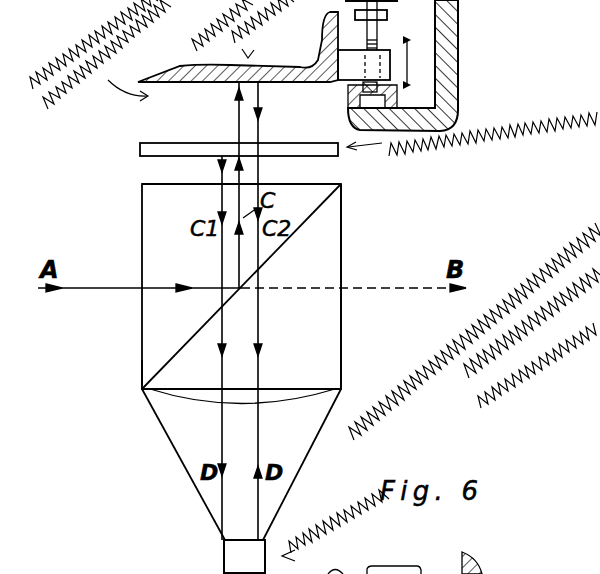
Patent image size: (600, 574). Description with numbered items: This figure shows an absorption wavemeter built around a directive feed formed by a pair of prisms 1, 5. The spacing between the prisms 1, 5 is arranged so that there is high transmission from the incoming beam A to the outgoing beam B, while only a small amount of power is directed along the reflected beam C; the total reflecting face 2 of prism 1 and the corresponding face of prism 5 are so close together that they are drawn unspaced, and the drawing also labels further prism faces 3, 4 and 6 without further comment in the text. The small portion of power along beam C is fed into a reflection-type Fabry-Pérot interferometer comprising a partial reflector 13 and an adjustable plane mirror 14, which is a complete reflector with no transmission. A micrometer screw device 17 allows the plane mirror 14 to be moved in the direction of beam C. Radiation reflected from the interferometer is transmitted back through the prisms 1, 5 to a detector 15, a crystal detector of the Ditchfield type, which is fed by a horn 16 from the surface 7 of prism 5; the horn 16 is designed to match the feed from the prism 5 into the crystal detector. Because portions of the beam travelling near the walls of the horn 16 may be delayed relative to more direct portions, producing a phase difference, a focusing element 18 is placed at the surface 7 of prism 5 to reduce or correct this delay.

The prism 1 is at (172, 240).
The total reflecting face 2 is at (327, 183).
The entrance face 3 is at (150, 183).
The lower corner of reflecting surface 4 is at (142, 376).
The prism 5 is at (306, 338).
The exit face 6 is at (341, 238).
The surface 7 is at (292, 388).
The partial reflector 13 is at (293, 142).
The adjustable plane mirror 14 is at (163, 84).
The detector 15 is at (254, 570).
The horn 16 is at (170, 445).
The micrometer screw device 17 is at (381, 50).
The focusing element 18 is at (280, 400).